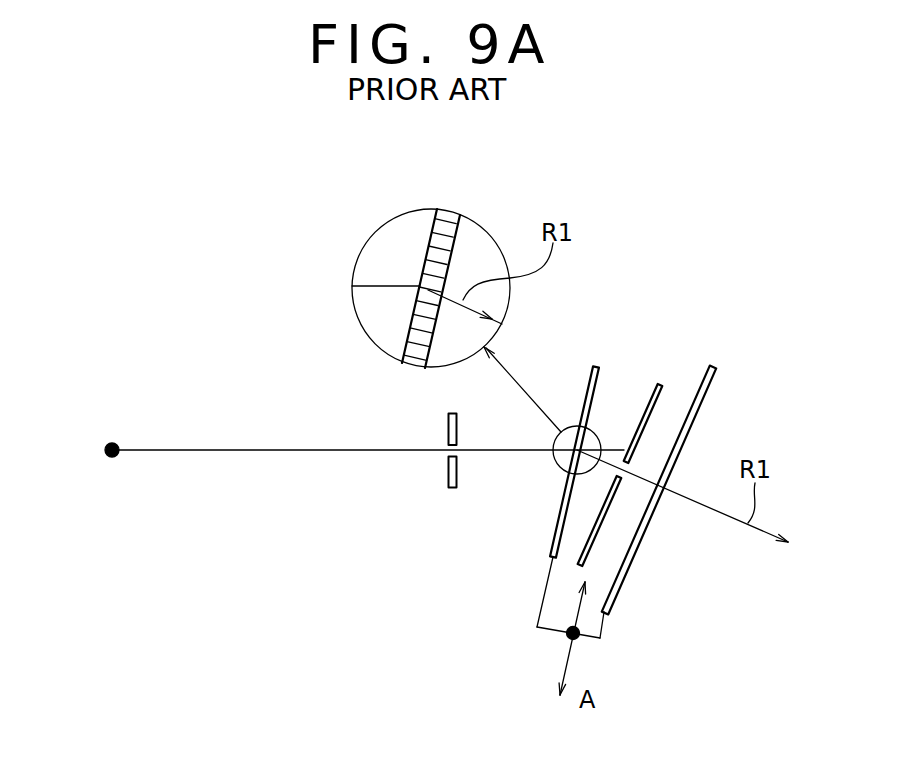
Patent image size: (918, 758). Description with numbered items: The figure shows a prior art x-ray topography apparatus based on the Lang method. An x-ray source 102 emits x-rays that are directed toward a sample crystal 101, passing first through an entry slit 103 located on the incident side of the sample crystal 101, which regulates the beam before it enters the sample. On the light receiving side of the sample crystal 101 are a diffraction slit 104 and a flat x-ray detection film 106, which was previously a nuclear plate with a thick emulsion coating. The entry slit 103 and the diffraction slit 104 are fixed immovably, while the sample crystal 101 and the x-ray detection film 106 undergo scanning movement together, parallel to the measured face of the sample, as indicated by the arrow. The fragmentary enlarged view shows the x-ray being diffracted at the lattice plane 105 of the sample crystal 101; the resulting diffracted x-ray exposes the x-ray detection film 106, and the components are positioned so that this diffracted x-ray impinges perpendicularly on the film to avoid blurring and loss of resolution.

The sample crystal 101 is at (449, 220).
The x-ray source 102 is at (109, 443).
The entry slit 103 is at (452, 489).
The diffraction slit 104 is at (660, 383).
The lattice plane 105 is at (435, 272).
The x-ray detection film 106 is at (714, 367).